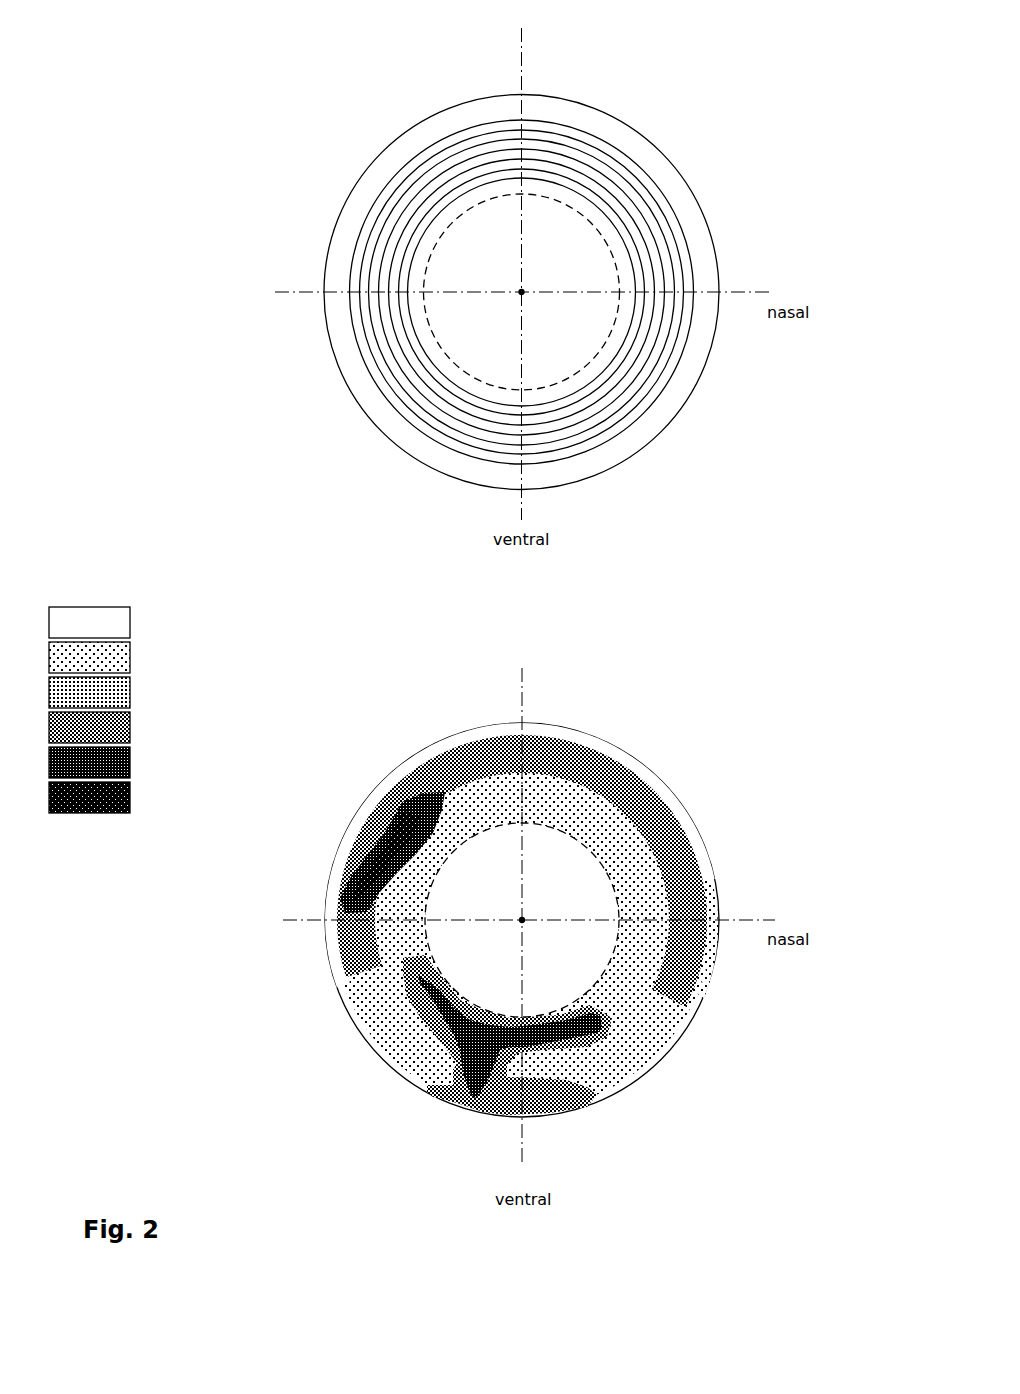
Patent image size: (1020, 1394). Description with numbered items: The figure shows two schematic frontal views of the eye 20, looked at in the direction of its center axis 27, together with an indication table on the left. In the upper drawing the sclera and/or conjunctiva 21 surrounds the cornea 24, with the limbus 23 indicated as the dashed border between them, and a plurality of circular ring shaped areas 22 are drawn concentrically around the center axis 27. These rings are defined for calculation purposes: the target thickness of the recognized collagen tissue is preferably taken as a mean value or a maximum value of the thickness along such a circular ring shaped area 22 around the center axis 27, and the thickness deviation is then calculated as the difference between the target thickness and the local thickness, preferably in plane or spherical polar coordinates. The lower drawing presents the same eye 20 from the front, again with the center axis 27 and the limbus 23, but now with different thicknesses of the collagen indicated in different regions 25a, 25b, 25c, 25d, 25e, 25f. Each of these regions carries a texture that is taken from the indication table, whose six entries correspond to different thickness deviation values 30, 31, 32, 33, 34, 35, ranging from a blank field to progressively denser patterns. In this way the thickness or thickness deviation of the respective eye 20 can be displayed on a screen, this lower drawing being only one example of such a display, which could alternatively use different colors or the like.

The eye 20 is at (614, 102).
The sclera and/or conjunctiva 21 is at (656, 157).
The circular ring shaped areas 22 is at (666, 203).
The limbus 23 is at (615, 258).
The cornea 24 is at (576, 312).
The center axis 27 is at (522, 293).
The region 25a is at (703, 857).
The region 25b is at (705, 897).
The region 25c is at (650, 1013).
The region 25d is at (603, 1037).
The region 25e is at (570, 1113).
The region 25f is at (330, 880).
The thickness deviation value 30 is at (115, 626).
The thickness deviation value 31 is at (115, 661).
The thickness deviation value 32 is at (115, 696).
The thickness deviation value 33 is at (115, 731).
The thickness deviation value 34 is at (115, 766).
The thickness deviation value 35 is at (115, 801).